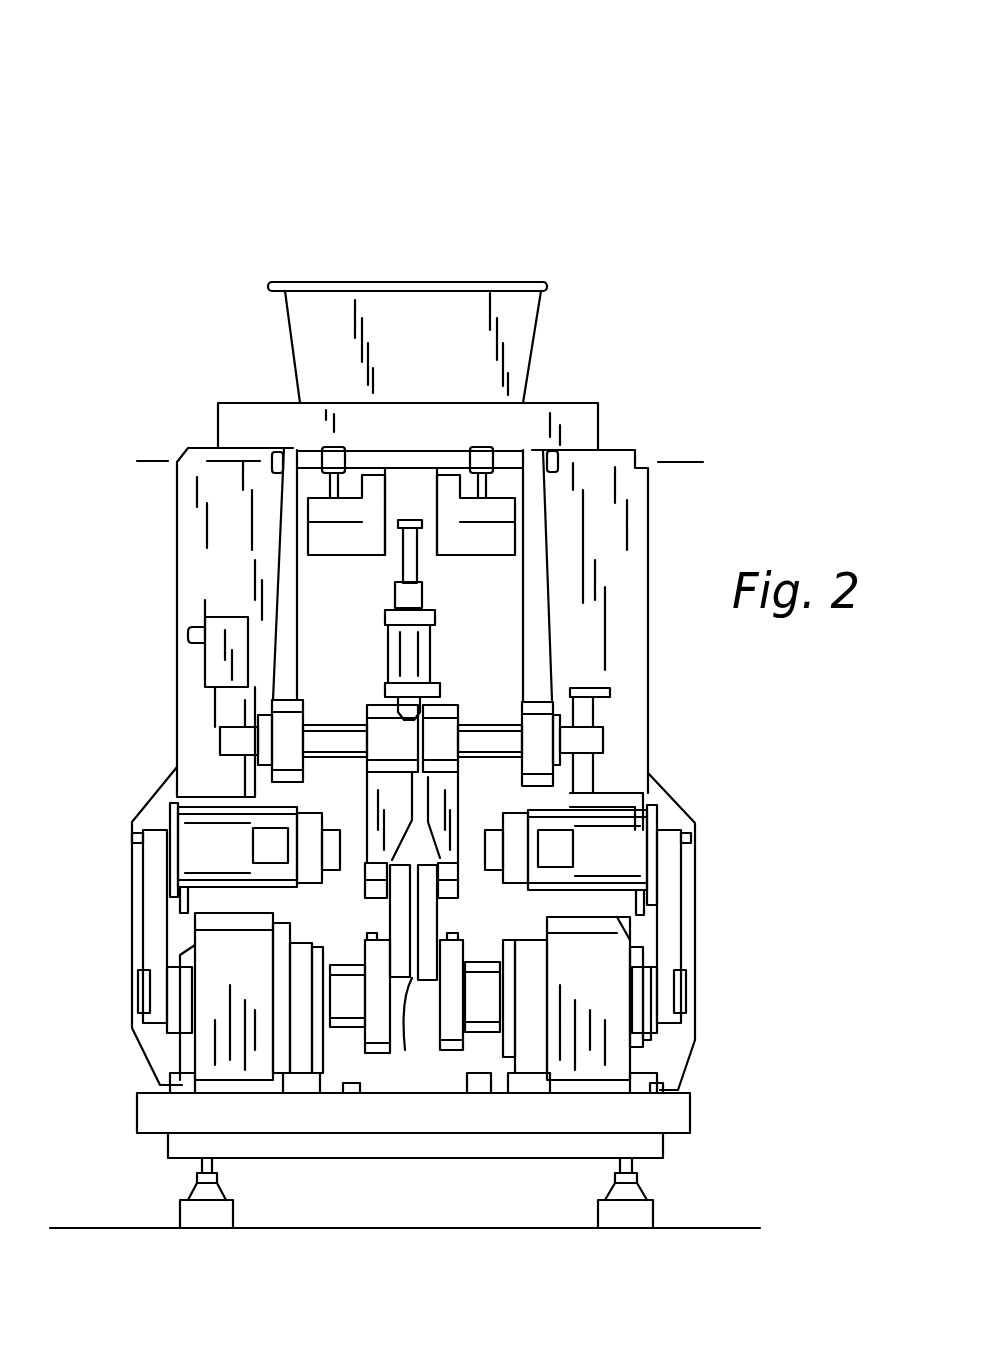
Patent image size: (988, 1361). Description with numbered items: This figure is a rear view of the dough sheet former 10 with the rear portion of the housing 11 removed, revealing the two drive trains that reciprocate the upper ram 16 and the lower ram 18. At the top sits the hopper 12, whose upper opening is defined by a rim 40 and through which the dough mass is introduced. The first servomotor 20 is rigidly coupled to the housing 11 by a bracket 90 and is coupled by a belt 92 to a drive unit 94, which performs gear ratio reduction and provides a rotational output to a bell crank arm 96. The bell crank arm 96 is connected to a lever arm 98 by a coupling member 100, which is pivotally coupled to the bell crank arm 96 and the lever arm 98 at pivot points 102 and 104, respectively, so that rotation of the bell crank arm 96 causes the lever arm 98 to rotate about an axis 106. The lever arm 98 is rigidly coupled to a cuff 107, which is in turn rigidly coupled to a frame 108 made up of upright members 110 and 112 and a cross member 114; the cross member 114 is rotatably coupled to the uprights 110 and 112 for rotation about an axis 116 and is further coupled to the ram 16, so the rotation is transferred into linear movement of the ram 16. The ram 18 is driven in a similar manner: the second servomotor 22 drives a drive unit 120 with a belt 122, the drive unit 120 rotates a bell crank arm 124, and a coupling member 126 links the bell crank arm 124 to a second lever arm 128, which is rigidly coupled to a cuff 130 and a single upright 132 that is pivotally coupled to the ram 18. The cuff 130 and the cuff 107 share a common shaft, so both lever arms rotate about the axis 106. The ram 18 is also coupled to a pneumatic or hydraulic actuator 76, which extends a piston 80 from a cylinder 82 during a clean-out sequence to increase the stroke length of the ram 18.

The dough sheet former 10 is at (165, 128).
The housing 11 is at (648, 716).
The hopper 12 is at (535, 345).
The upper ram 16 is at (505, 515).
The lower ram 18 is at (500, 543).
The first servomotor 20 is at (200, 830).
The second servomotor 22 is at (618, 837).
The rim 40 is at (548, 290).
The actuator 76 is at (433, 660).
The piston 80 is at (422, 577).
The cylinder 82 is at (435, 618).
The bracket 90 is at (177, 783).
The belt 92 is at (157, 934).
The drive unit 94 is at (193, 1048).
The bell crank arm 96 is at (376, 1055).
The lever arm 98 is at (367, 850).
The coupling member 100 is at (398, 930).
The pivot point 102 is at (365, 948).
The pivot point 104 is at (366, 882).
The axis 106 is at (615, 739).
The cuff 107 is at (327, 716).
The frame 108 is at (287, 595).
The upright member 110 is at (290, 520).
The upright member 112 is at (538, 658).
The cross member 114 is at (437, 458).
The axis 116 is at (683, 462).
The drive unit 120 is at (610, 1080).
The belt 122 is at (672, 933).
The bell crank arm 124 is at (450, 1057).
The coupling member 126 is at (440, 920).
The second lever arm 128 is at (462, 850).
The cuff 130 is at (445, 703).
The upright 132 is at (395, 597).